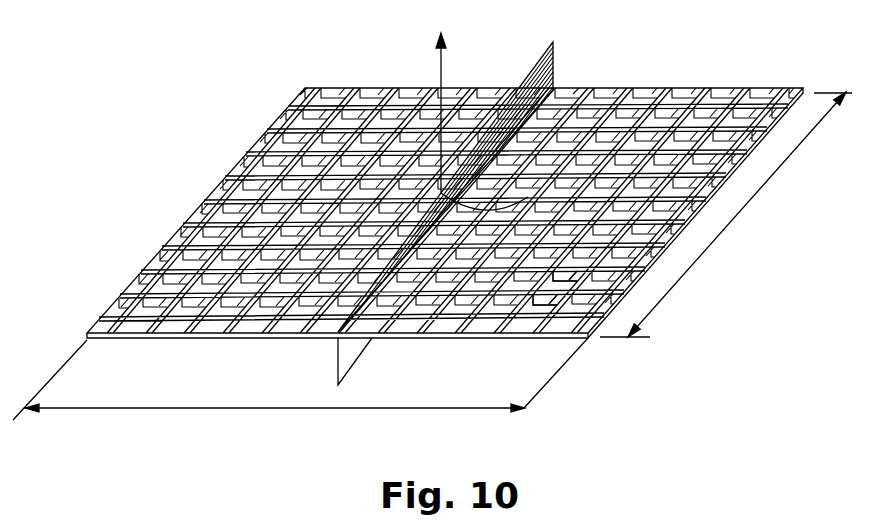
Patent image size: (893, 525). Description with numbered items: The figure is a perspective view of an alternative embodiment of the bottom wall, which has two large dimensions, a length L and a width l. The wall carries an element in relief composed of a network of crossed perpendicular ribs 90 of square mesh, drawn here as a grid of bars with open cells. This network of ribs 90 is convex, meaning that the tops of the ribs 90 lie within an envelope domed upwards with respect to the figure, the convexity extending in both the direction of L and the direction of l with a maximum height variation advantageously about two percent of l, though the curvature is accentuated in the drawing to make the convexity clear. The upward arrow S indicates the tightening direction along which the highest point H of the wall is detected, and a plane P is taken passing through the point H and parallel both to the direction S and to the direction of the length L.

The highest point H is at (633, 102).
The ribs 90 is at (571, 294).
The plane P is at (555, 72).
The tightening direction S is at (473, 121).
The length L is at (300, 392).
The width l is at (726, 214).